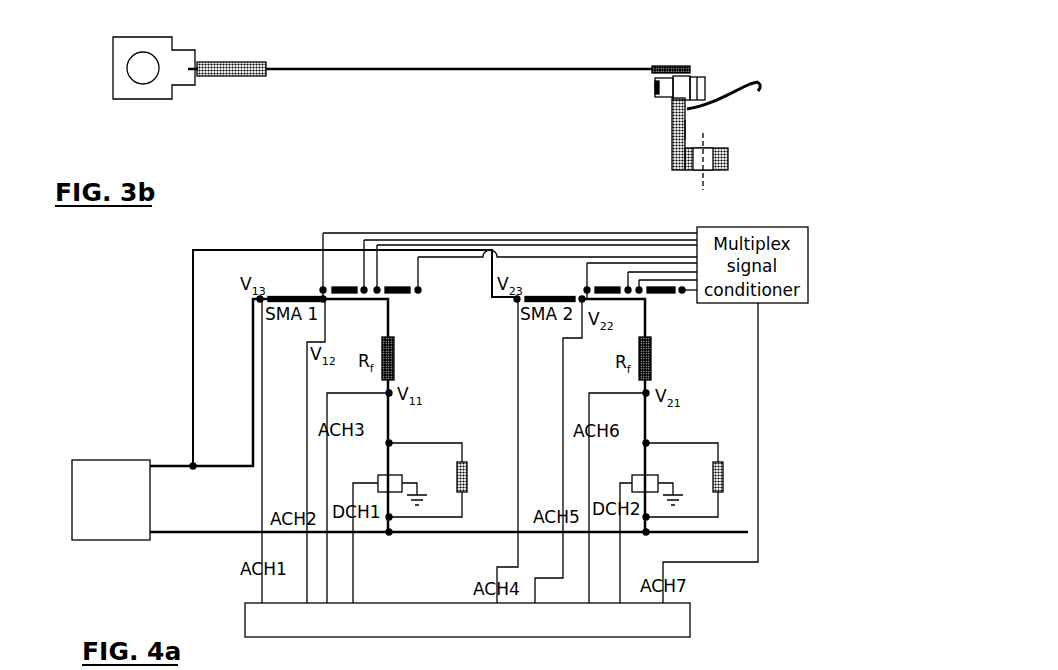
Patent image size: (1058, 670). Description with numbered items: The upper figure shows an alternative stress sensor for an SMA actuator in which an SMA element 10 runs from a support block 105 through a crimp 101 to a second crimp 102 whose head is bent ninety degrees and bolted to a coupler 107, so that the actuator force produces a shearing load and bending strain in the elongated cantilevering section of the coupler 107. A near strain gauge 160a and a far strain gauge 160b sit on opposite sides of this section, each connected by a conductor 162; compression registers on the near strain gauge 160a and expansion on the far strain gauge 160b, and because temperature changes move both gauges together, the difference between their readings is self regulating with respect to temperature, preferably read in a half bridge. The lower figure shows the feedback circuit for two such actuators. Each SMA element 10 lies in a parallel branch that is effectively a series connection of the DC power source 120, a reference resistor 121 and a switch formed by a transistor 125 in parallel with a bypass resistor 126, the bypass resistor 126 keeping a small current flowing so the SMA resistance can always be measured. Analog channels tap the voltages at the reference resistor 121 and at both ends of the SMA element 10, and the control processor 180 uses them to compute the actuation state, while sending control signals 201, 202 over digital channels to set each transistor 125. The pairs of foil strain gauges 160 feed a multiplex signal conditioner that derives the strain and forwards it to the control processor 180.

In FIG. 3b, the SMA element 10 is at (415, 66).
In FIG. 4a, the SMA element 10 is at (304, 297).
In FIG. 3b, the crimp connector 101 is at (263, 77).
In FIG. 3b, the crimp connector 102 is at (672, 67).
In FIG. 3b, the anchor block 105 is at (132, 97).
In FIG. 3b, the coupler 107 is at (671, 160).
In FIG. 3b, the near strain gauge 160a is at (670, 128).
In FIG. 3b, the far strain gauge 160b is at (686, 128).
In FIG. 3b, the conductor 162 is at (752, 88).
In FIG. 4a, the DC power source 120 is at (124, 463).
In FIG. 4a, the reference resistor 121 is at (394, 356).
In FIG. 4a, the transistor 125 is at (397, 476).
In FIG. 4a, the bypass resistor 126 is at (462, 462).
In FIG. 4a, the strain gauge 160 is at (347, 294).
In FIG. 4a, the control processor 180 is at (333, 630).
In FIG. 4a, the control signal 201 is at (355, 562).
In FIG. 4a, the digital channel line DCH2 202 is at (622, 537).